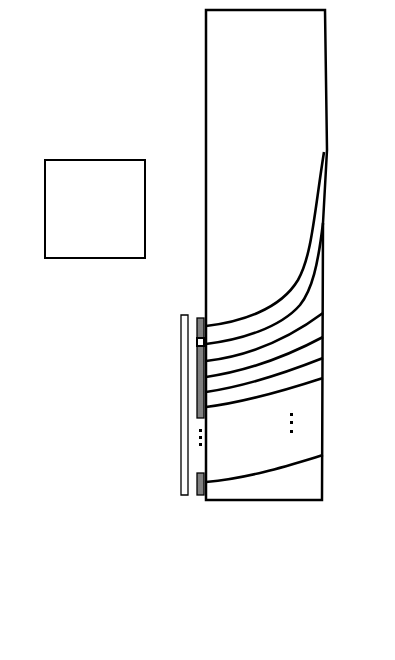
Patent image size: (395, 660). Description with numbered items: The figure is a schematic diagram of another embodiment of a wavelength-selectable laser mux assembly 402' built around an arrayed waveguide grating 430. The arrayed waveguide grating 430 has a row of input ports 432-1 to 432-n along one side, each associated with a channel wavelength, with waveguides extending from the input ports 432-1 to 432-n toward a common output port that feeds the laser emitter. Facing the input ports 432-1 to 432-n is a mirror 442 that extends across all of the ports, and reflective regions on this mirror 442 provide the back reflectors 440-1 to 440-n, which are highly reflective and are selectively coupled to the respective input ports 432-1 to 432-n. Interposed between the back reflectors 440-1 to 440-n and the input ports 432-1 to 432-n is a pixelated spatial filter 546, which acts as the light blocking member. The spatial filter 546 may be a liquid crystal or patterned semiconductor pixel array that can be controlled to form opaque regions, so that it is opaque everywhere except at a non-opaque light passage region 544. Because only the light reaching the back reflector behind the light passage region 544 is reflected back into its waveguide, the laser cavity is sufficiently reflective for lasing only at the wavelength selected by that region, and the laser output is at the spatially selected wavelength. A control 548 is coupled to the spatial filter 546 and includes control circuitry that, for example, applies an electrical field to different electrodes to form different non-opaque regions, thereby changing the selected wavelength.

The wavelength-selectable laser mux assembly 402' is at (186, 298).
The arrayed waveguide grating 430 is at (265, 500).
The first input port 432-1 is at (207, 325).
The nth input port 432-n is at (207, 482).
The control 548 is at (201, 303).
The mirror 442 is at (158, 396).
The first back reflector 440-1 is at (181, 328).
The nth back reflector 440-n is at (182, 480).
The pixelated spatial filter 546 is at (197, 322).
The non-opaque light passage region 544 is at (197, 343).